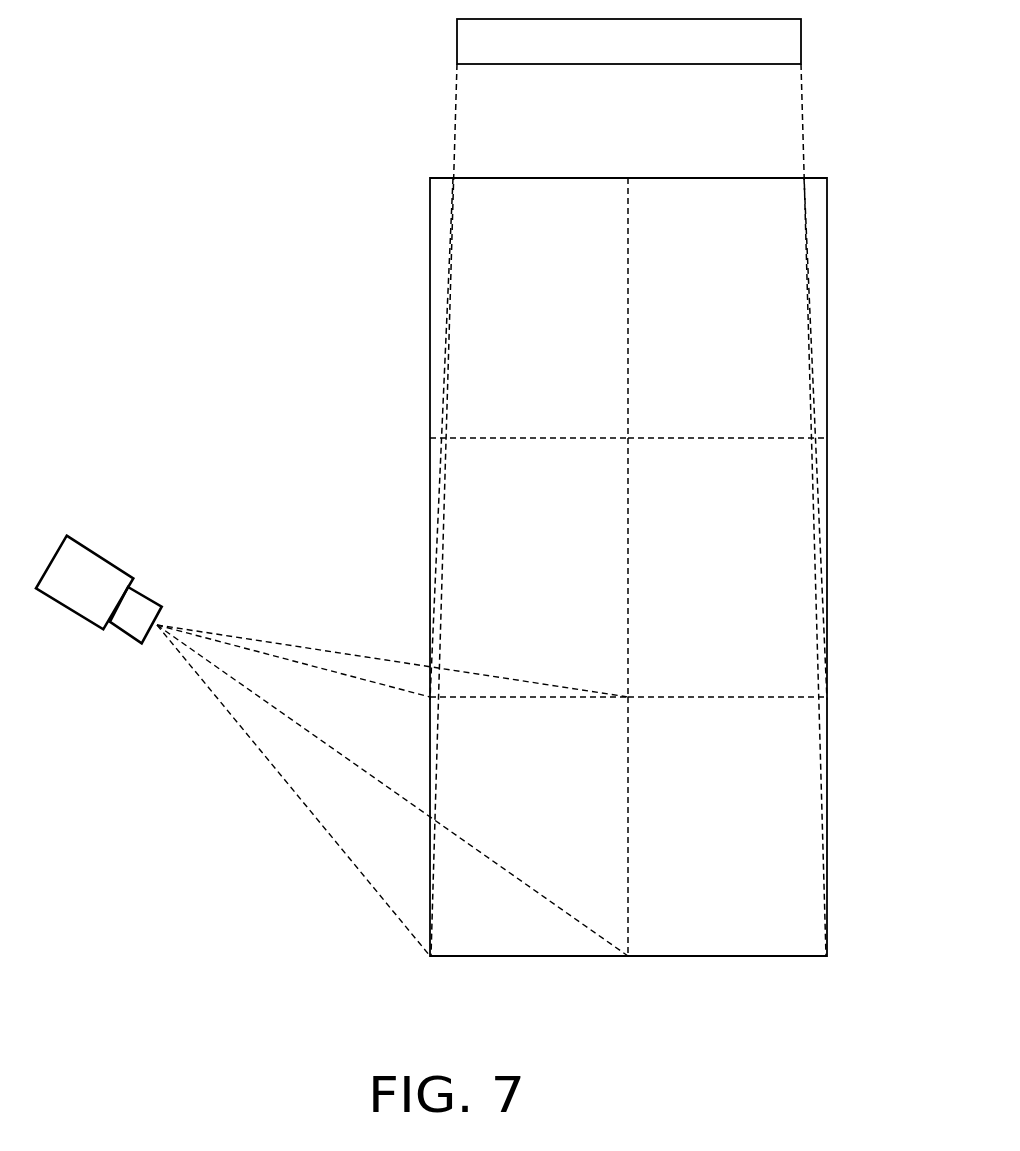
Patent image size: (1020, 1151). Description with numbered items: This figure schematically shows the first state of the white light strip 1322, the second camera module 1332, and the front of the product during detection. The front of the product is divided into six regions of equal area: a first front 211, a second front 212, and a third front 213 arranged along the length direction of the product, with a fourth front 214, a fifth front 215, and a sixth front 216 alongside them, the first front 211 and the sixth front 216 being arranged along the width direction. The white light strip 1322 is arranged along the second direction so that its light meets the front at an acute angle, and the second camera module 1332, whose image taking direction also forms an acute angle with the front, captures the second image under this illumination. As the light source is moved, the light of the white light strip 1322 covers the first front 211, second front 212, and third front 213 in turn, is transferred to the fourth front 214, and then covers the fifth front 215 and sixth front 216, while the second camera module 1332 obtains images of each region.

The white light strip 1322 is at (482, 42).
The second camera module 1332 is at (92, 571).
The first front 211 is at (449, 717).
The second front 212 is at (448, 572).
The third front 213 is at (449, 247).
The fourth front 214 is at (812, 255).
The fifth front 215 is at (813, 580).
The sixth front 216 is at (813, 905).